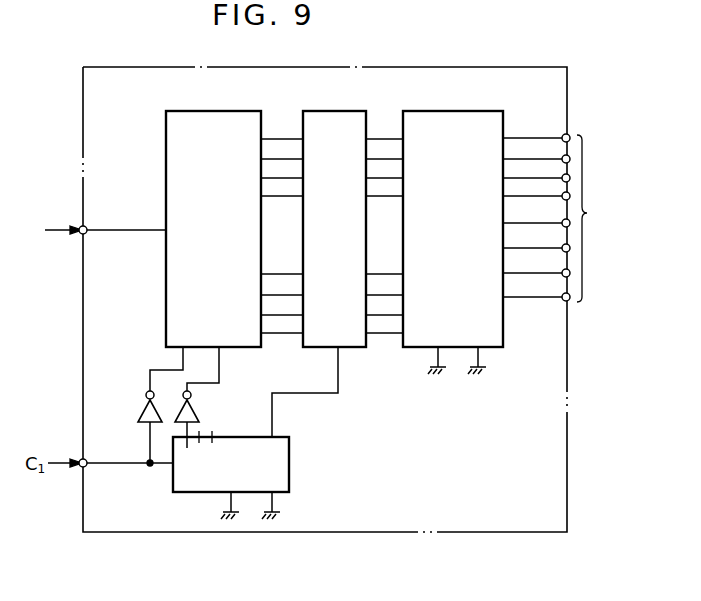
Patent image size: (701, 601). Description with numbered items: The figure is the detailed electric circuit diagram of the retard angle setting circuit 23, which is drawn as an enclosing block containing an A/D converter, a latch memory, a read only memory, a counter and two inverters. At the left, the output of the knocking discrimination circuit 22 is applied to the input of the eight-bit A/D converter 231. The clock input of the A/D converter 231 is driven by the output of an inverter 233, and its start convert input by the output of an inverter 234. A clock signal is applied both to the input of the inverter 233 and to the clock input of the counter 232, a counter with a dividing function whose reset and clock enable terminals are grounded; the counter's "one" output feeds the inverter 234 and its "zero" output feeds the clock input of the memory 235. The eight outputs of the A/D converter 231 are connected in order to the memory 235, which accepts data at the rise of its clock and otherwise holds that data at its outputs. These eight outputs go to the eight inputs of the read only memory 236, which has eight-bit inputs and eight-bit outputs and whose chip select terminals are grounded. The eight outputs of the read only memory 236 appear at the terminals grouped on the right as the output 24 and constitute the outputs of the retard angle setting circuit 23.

The knocking discrimination circuit 22 is at (90, 231).
The retard angle setting circuit 23 is at (481, 67).
The digital output terminals 24 is at (590, 210).
The 8-bits A/D converter 231 is at (226, 111).
The counter 232 is at (289, 469).
The inverter 233 is at (141, 412).
The inverter 234 is at (197, 404).
The memory 235 is at (369, 111).
The read only memory (ROM) 236 is at (504, 329).